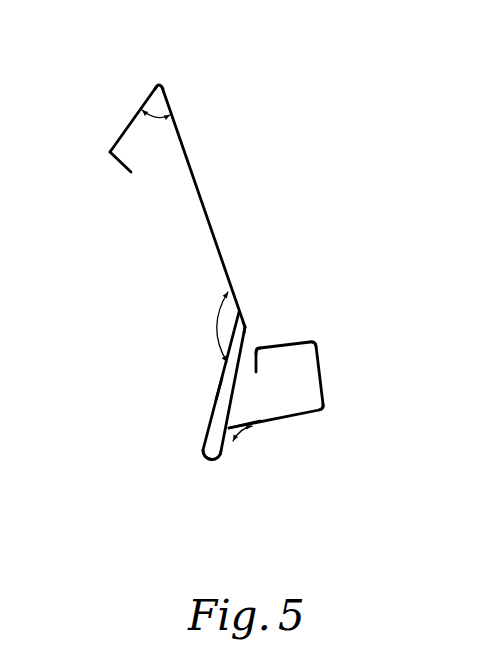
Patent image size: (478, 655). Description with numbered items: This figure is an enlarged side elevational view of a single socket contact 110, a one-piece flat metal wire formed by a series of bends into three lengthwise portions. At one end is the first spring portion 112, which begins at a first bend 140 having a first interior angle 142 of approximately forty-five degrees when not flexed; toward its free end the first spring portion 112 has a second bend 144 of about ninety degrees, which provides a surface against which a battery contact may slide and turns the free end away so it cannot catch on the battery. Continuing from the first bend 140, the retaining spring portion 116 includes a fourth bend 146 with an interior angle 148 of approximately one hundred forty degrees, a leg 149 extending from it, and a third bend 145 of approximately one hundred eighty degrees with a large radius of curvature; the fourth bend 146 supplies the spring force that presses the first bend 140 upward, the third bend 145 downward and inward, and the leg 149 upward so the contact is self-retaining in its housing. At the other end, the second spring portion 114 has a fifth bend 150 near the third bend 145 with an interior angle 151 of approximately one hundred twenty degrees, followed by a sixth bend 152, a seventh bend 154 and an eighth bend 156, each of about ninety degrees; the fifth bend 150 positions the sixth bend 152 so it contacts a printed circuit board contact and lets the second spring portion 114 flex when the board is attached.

The socket contact 110 is at (250, 154).
The first spring portion 112 is at (139, 108).
The first bend 140 is at (155, 80).
The second bend 144 is at (110, 153).
The first interior angle 142 is at (150, 118).
The fourth bend 146 is at (246, 328).
The interior angle 148 is at (218, 323).
The retaining spring portion 116 is at (210, 422).
The leg 149 is at (218, 393).
The third bend 145 is at (211, 459).
The second spring portion 114 is at (324, 377).
The seventh bend 154 is at (316, 338).
The eighth bend 156 is at (256, 348).
The sixth bend 152 is at (324, 408).
The fifth bend 150 is at (229, 420).
The interior angle 151 is at (247, 438).